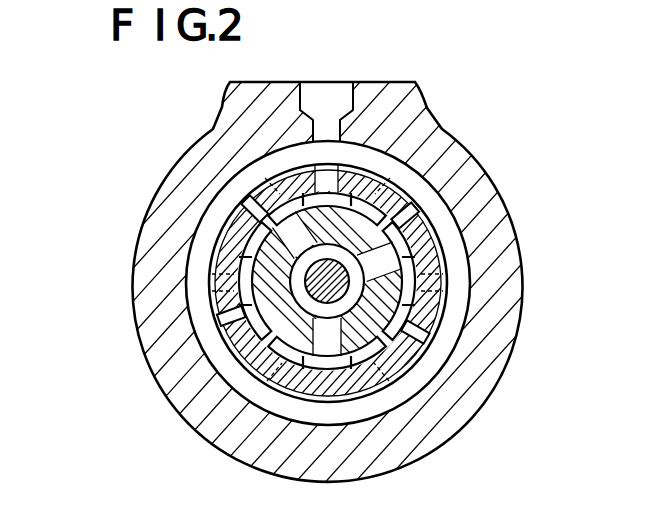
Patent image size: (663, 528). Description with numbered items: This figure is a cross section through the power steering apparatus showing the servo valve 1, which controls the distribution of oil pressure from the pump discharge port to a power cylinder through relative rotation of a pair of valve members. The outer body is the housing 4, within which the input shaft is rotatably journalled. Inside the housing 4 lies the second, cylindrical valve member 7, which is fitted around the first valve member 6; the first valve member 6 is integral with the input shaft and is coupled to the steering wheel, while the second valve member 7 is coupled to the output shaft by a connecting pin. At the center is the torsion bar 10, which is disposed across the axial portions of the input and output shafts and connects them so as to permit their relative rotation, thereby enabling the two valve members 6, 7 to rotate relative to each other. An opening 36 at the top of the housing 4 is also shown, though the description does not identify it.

The servo valve 1 is at (362, 403).
The housing 4 is at (500, 383).
The first valve member 6 is at (388, 357).
The second valve member 7 is at (307, 402).
The torsion bar 10 is at (337, 290).
The inlet slot 36 is at (346, 93).